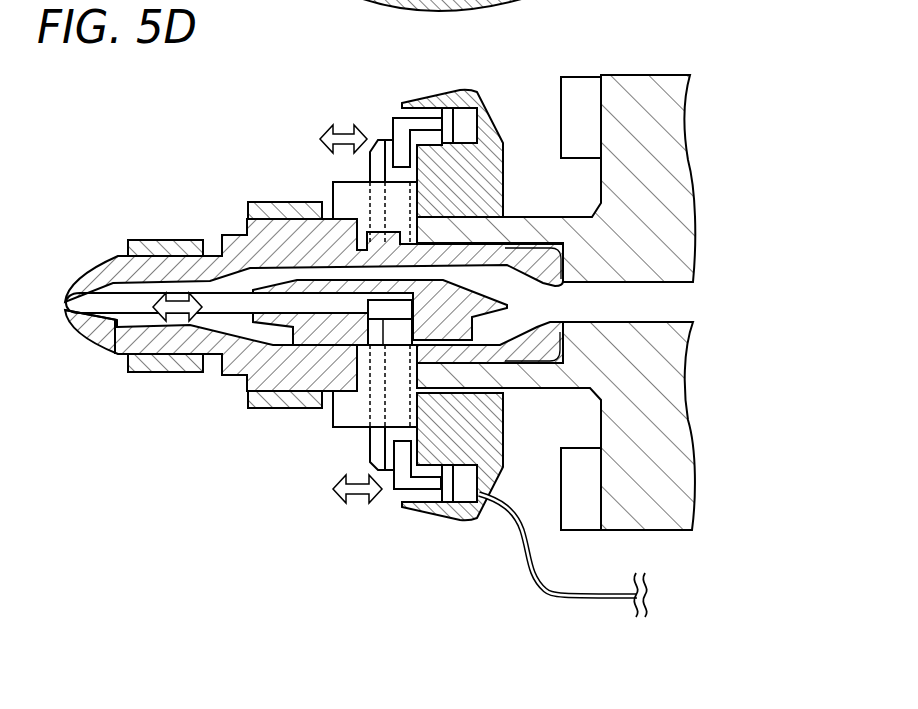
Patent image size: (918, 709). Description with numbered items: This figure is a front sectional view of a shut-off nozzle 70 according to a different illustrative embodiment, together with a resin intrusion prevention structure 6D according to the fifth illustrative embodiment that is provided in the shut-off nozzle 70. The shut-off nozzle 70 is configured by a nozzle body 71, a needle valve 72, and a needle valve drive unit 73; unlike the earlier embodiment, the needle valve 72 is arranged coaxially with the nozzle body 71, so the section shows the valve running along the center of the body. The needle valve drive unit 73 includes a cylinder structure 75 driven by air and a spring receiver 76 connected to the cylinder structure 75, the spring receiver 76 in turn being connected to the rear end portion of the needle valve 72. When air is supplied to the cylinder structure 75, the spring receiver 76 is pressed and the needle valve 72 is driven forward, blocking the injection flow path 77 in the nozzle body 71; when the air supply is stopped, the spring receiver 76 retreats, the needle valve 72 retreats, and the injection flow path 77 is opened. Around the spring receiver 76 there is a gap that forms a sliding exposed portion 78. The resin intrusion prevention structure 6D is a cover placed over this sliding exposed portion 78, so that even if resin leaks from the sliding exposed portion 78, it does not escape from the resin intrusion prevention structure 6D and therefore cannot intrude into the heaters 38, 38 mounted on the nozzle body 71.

The shut-off nozzle 70 is at (128, 141).
The nozzle body 71 is at (223, 377).
The needle valve 72 is at (113, 352).
The heater 38 is at (262, 203).
The injection flow path 77 is at (112, 292).
The sliding exposed portion 78 is at (363, 342).
The resin intrusion prevention structure 6D is at (337, 182).
The spring receiver 76 is at (360, 450).
The needle valve drive unit 73 is at (348, 102).
The cylinder structure 75 is at (463, 492).